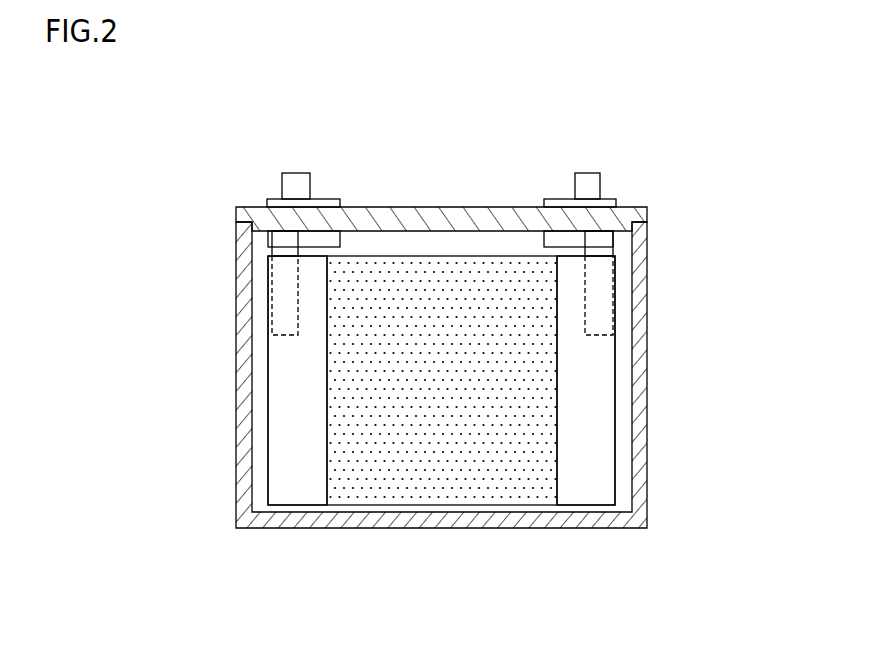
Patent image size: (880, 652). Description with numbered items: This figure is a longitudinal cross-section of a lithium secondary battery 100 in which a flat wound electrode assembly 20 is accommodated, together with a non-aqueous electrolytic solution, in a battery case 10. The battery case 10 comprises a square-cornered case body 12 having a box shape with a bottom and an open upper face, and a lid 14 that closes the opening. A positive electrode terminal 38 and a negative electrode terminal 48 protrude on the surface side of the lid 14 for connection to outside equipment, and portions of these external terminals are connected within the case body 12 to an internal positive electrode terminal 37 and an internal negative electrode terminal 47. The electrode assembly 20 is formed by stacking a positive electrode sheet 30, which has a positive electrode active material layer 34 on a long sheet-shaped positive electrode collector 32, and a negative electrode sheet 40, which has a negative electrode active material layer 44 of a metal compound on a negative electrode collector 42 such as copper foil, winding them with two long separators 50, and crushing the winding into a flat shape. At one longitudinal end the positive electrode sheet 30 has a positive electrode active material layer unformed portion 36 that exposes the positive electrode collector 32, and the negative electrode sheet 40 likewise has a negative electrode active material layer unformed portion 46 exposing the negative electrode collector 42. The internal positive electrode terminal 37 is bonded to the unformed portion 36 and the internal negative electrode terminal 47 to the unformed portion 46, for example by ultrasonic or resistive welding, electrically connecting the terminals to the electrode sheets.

The lithium secondary battery 100 is at (207, 89).
The battery case 10 is at (652, 417).
The case body 12 is at (640, 328).
The lid 14 is at (379, 204).
The electrode assembly 20 is at (463, 248).
The positive electrode sheet 30 is at (283, 434).
The positive electrode collector 32 is at (297, 494).
The positive electrode active material layer 34 is at (387, 470).
The positive electrode active material layer unformed portion 36 is at (287, 463).
The internal positive electrode terminal 37 is at (283, 252).
The positive electrode terminal 38 is at (293, 182).
The negative electrode sheet 40 is at (606, 429).
The negative electrode collector 42 is at (582, 497).
The negative electrode active material layer 44 is at (528, 470).
The negative electrode active material layer unformed portion 46 is at (602, 473).
The internal negative electrode terminal 47 is at (602, 250).
The negative electrode terminal 48 is at (588, 180).
The separator 50 is at (453, 490).